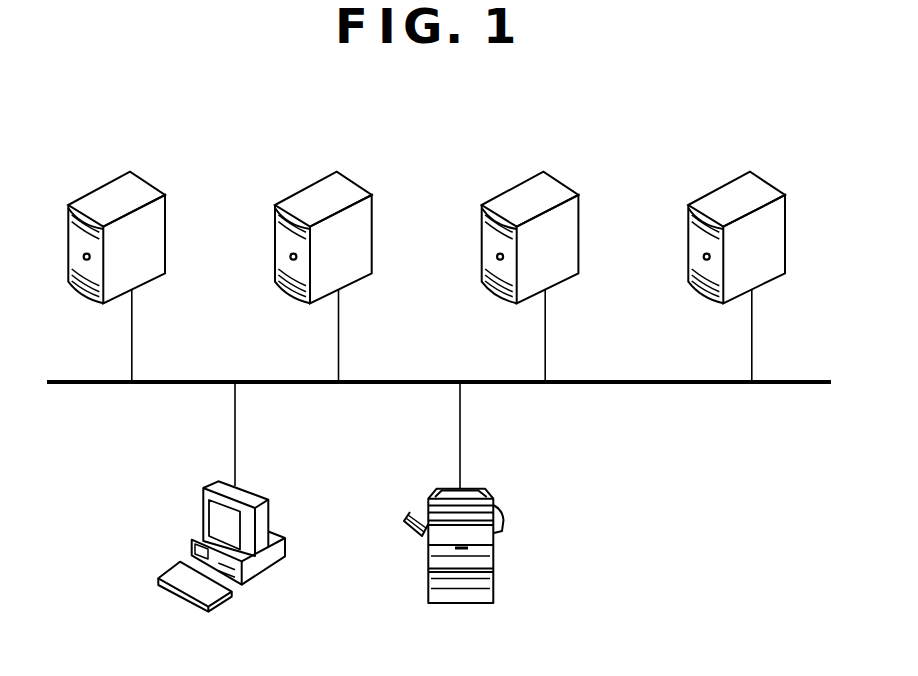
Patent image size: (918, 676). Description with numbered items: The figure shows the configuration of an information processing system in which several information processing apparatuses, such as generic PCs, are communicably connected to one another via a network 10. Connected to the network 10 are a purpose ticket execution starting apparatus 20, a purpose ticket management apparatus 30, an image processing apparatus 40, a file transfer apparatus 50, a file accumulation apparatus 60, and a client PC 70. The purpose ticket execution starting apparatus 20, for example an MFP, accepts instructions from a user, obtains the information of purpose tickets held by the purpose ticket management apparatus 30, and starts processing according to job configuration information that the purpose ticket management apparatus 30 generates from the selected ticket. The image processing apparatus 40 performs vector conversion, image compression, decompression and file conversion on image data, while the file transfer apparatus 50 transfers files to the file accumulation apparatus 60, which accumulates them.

The network 10 is at (635, 384).
The purpose ticket execution starting apparatus 20 is at (457, 605).
The purpose ticket management apparatus 30 is at (147, 181).
The image processing apparatus 40 is at (354, 181).
The file transfer apparatus 50 is at (560, 181).
The file accumulation apparatus 60 is at (767, 181).
The client PC 70 is at (216, 609).